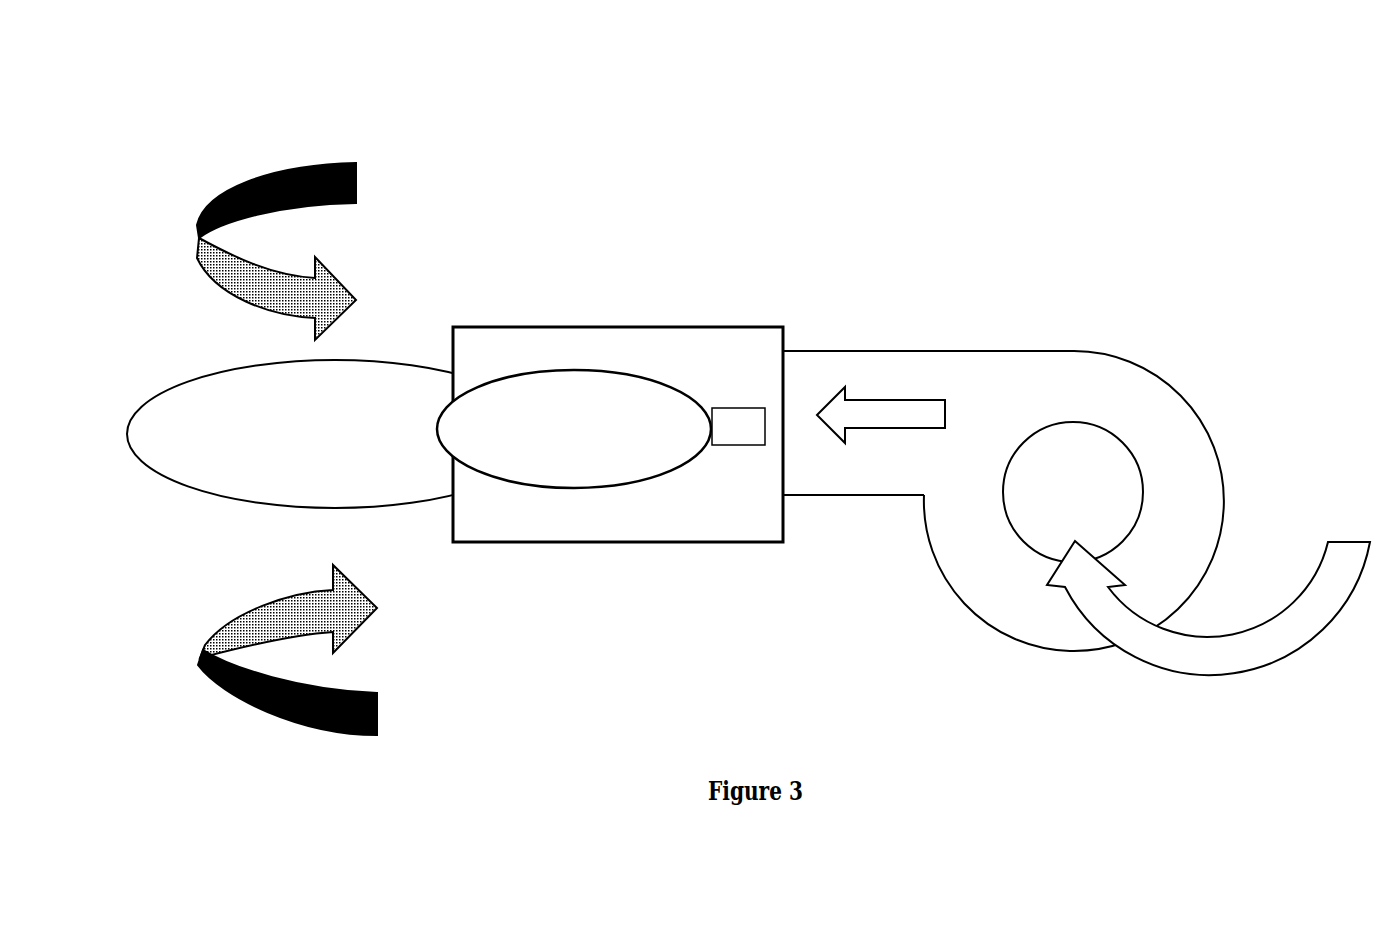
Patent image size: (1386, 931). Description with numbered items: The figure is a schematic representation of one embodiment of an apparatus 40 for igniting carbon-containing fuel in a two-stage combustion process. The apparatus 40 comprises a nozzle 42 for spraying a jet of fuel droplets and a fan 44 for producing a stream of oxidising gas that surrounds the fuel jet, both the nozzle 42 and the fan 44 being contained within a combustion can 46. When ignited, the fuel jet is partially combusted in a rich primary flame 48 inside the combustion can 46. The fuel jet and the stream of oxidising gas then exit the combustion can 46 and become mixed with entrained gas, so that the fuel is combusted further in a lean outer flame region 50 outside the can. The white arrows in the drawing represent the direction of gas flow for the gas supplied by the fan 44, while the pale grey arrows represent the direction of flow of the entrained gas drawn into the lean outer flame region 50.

The apparatus 40 is at (1031, 177).
The nozzle 42 is at (753, 399).
The fan 44 is at (918, 563).
The combustion can 46 is at (627, 551).
The rich primary flame 48 is at (543, 398).
The lean outer flame region 50 is at (228, 464).